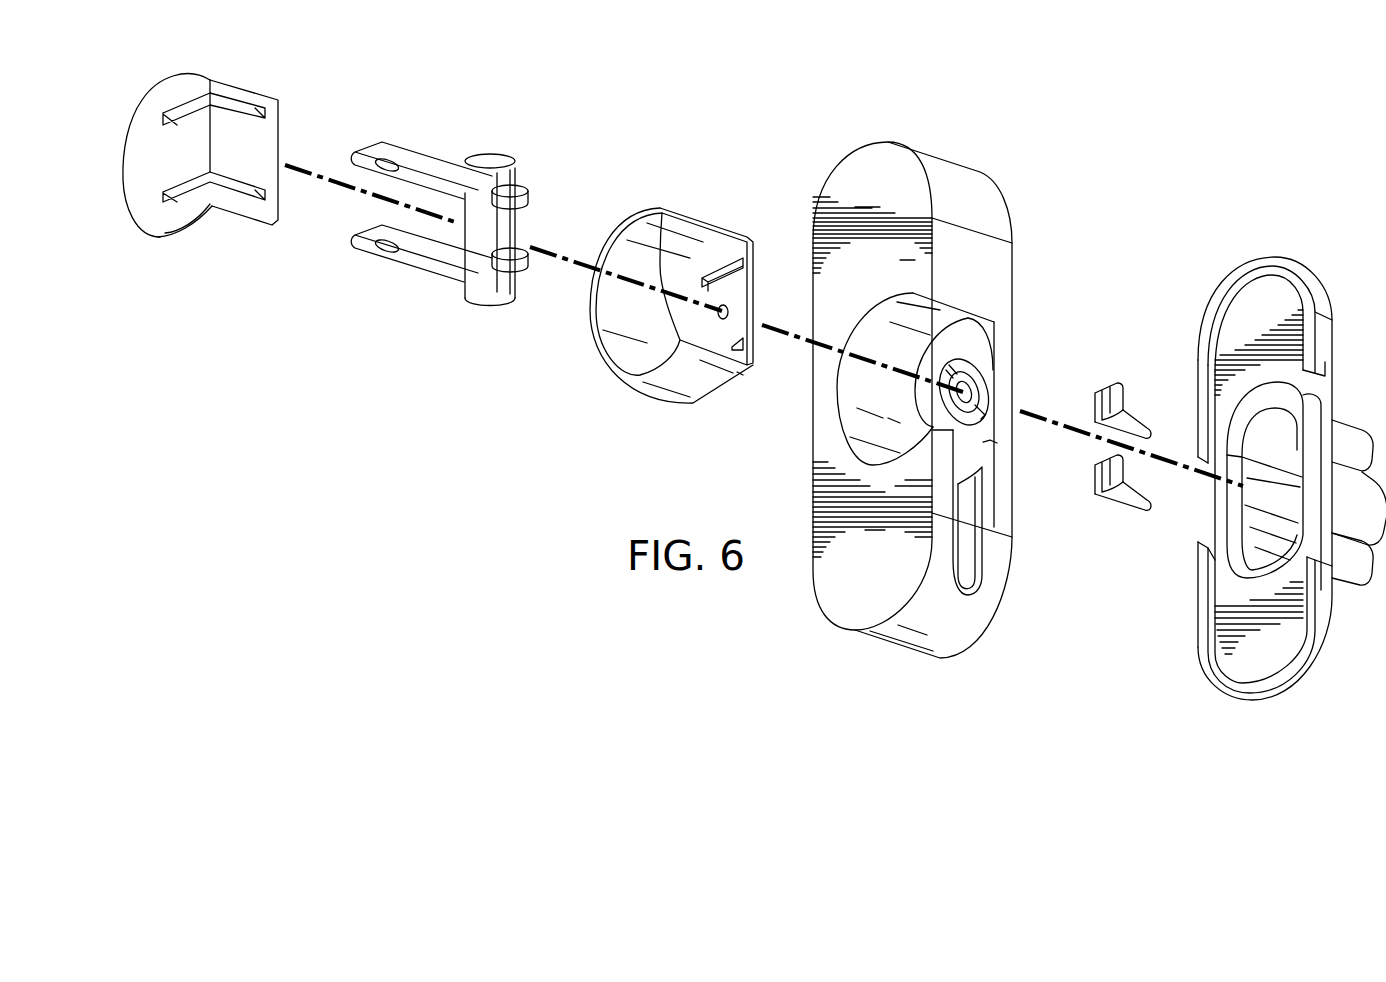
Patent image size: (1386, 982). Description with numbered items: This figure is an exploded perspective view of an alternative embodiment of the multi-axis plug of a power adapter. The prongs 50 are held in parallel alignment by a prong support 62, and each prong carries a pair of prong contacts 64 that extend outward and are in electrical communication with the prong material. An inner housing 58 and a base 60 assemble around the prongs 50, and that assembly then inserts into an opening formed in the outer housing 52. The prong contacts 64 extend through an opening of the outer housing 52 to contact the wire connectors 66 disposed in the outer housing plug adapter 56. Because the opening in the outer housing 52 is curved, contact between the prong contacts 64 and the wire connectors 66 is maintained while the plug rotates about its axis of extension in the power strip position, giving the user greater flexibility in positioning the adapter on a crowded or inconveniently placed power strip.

The prongs 50 is at (428, 157).
The outer housing 52 is at (955, 658).
The outer housing plug adapter 56 is at (1262, 700).
The inner housing 58 is at (247, 92).
The base 60 is at (662, 397).
The prong support 62 is at (470, 235).
The prong contacts 64 is at (531, 212).
The wire connectors 66 is at (1108, 382).